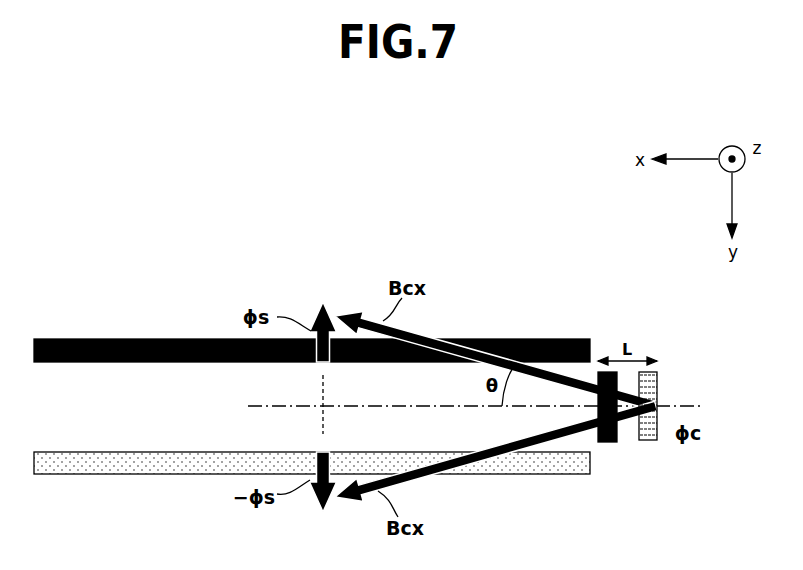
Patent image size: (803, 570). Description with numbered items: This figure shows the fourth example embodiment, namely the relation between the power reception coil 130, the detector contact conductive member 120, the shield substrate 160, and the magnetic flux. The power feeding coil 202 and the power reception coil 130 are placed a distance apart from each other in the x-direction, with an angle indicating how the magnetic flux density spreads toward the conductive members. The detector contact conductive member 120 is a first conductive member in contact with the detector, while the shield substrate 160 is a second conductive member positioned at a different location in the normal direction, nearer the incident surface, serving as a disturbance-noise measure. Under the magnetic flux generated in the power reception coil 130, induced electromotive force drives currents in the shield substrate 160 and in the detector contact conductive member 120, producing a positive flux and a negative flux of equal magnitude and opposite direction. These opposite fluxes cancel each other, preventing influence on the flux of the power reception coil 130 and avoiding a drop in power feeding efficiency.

The shield substrate 160 is at (131, 339).
The detector contact conductive member 120 is at (120, 474).
The power reception coil 130 is at (606, 442).
The power feeding coil 202 is at (657, 377).